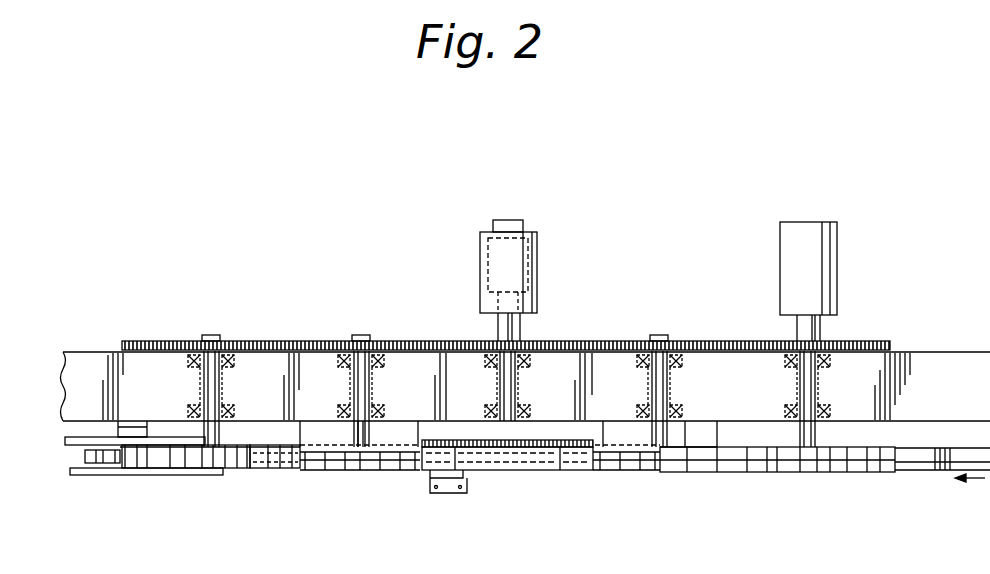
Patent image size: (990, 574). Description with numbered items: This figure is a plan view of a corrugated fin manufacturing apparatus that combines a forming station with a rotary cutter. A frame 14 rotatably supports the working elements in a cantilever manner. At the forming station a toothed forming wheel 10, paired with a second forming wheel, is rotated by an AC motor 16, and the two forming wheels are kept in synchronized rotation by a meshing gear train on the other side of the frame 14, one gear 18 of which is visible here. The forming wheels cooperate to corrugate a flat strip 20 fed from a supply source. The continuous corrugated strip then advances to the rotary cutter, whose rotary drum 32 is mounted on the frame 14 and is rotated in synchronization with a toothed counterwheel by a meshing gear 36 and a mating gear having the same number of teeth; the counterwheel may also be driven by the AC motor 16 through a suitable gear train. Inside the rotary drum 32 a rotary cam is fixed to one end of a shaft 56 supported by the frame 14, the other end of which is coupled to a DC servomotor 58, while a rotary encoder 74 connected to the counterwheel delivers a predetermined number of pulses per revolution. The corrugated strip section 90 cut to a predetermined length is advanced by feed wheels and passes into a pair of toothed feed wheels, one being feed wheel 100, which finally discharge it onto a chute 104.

The frame 14 is at (975, 362).
The gear 18 is at (883, 345).
The AC motor 16 is at (838, 262).
The DC servomotor 58 is at (537, 290).
The rotary encoder 74 is at (533, 258).
The shaft 56 is at (515, 330).
The gear 36 is at (478, 440).
The rotary drum 32 is at (510, 463).
The toothed forming wheel 10 is at (860, 467).
The flat strip 20 is at (920, 462).
The corrugated strip section 90 is at (93, 459).
The chute 104 is at (165, 470).
The toothed feed wheel 100 is at (243, 462).